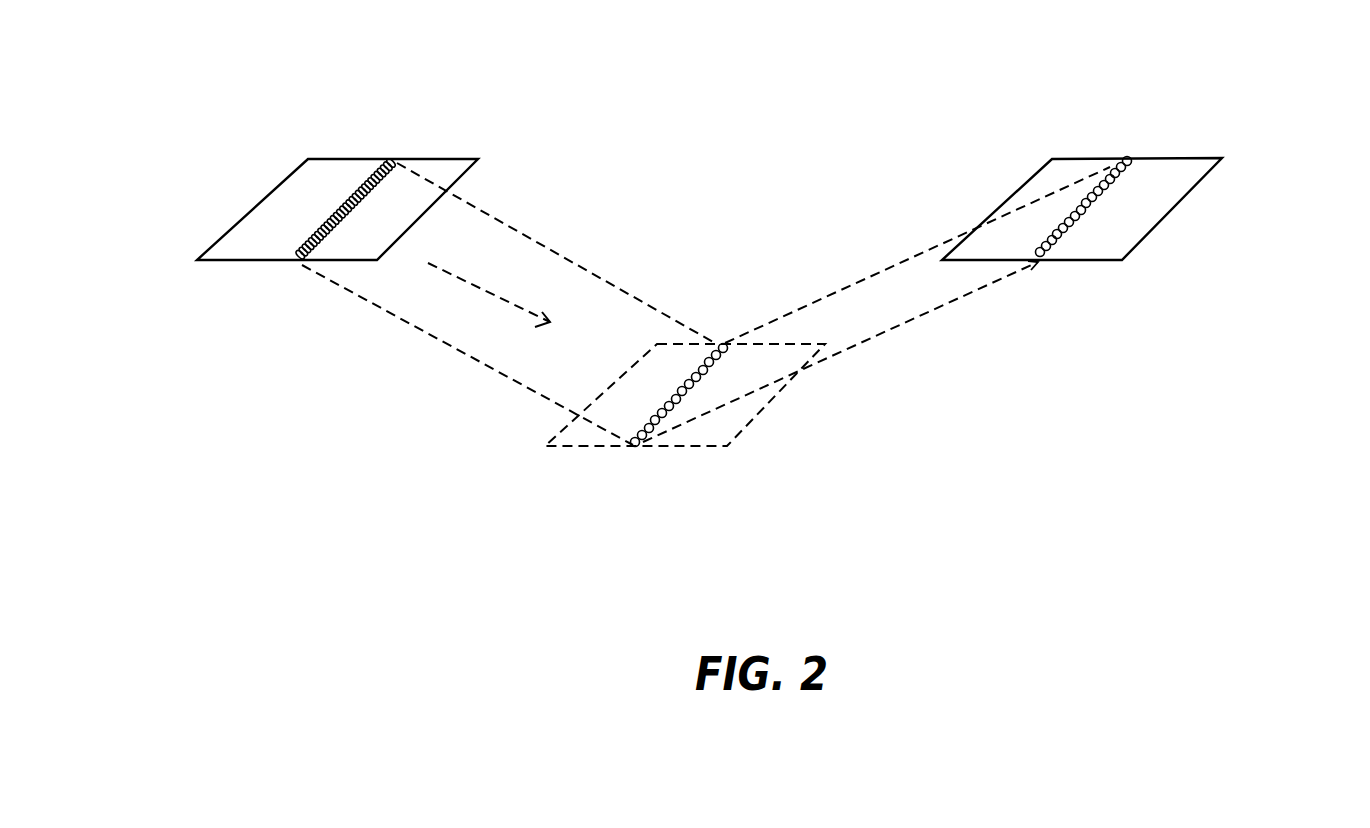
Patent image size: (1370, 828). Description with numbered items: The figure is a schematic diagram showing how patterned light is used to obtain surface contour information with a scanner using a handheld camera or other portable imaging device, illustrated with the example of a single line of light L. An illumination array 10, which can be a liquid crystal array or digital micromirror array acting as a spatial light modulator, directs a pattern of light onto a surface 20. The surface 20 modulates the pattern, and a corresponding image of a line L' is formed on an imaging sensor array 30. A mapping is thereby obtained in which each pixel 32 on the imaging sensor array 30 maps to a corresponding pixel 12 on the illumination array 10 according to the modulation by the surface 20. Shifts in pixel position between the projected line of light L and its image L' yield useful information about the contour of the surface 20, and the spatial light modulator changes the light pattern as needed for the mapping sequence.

The illumination array 10 is at (477, 158).
The pixel 12 is at (365, 183).
The surface 20 is at (730, 437).
The imaging sensor array 30 is at (1197, 185).
The pixel 32 is at (1105, 178).
The line of light L is at (467, 304).
The image of a line L' is at (876, 304).